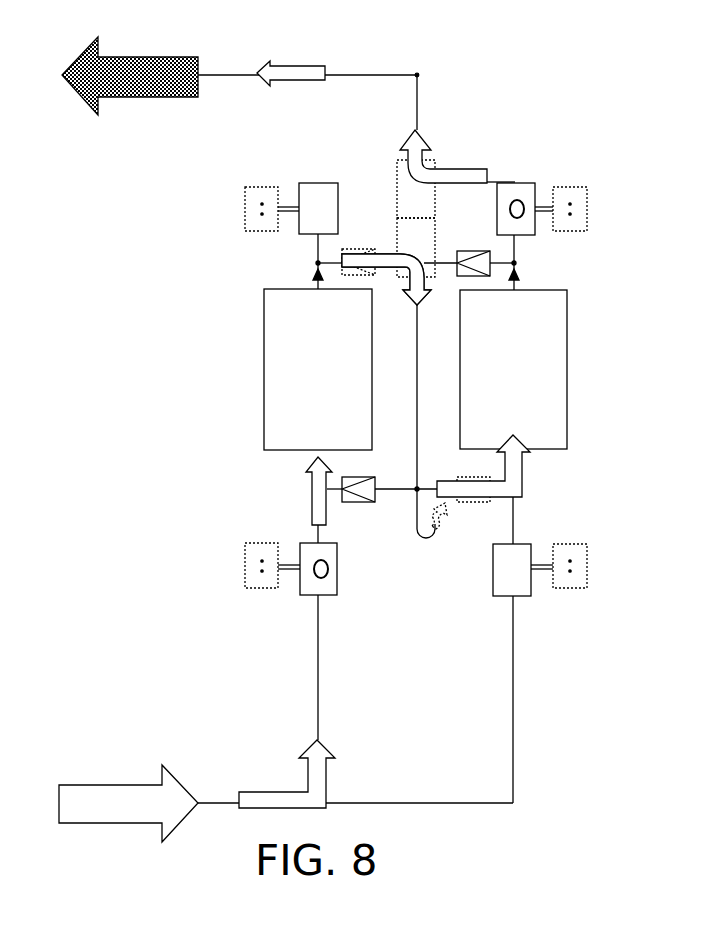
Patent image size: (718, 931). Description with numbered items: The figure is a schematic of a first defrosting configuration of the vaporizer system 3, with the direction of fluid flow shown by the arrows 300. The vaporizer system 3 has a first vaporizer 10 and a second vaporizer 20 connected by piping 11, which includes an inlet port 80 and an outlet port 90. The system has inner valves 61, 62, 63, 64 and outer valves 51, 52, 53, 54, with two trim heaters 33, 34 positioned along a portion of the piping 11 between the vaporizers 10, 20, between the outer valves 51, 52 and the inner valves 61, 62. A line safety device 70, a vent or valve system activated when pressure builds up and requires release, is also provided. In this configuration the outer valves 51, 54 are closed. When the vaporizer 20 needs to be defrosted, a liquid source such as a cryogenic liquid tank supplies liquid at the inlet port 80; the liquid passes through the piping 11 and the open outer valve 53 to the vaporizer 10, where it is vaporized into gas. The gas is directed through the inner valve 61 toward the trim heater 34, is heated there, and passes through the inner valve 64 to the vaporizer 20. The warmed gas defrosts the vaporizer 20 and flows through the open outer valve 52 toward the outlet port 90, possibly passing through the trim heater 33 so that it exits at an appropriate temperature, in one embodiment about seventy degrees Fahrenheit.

The vaporizer system 3 is at (474, 369).
The first vaporizer 10 is at (318, 369).
The second vaporizer 20 is at (513, 369).
The piping 11 is at (415, 800).
The trim heater 33 is at (456, 174).
The trim heater 34 is at (388, 261).
The outer valve 51 is at (298, 218).
The outer valve 52 is at (533, 233).
The outer valve 53 is at (337, 573).
The outer valve 54 is at (493, 568).
The inner valve 61 is at (363, 248).
The inner valve 62 is at (473, 249).
The inner valve 63 is at (348, 480).
The inner valve 64 is at (490, 500).
The line safety device 70 is at (413, 542).
The inlet port 80 is at (197, 810).
The outlet port 90 is at (208, 66).
The arrows 300 is at (300, 780).